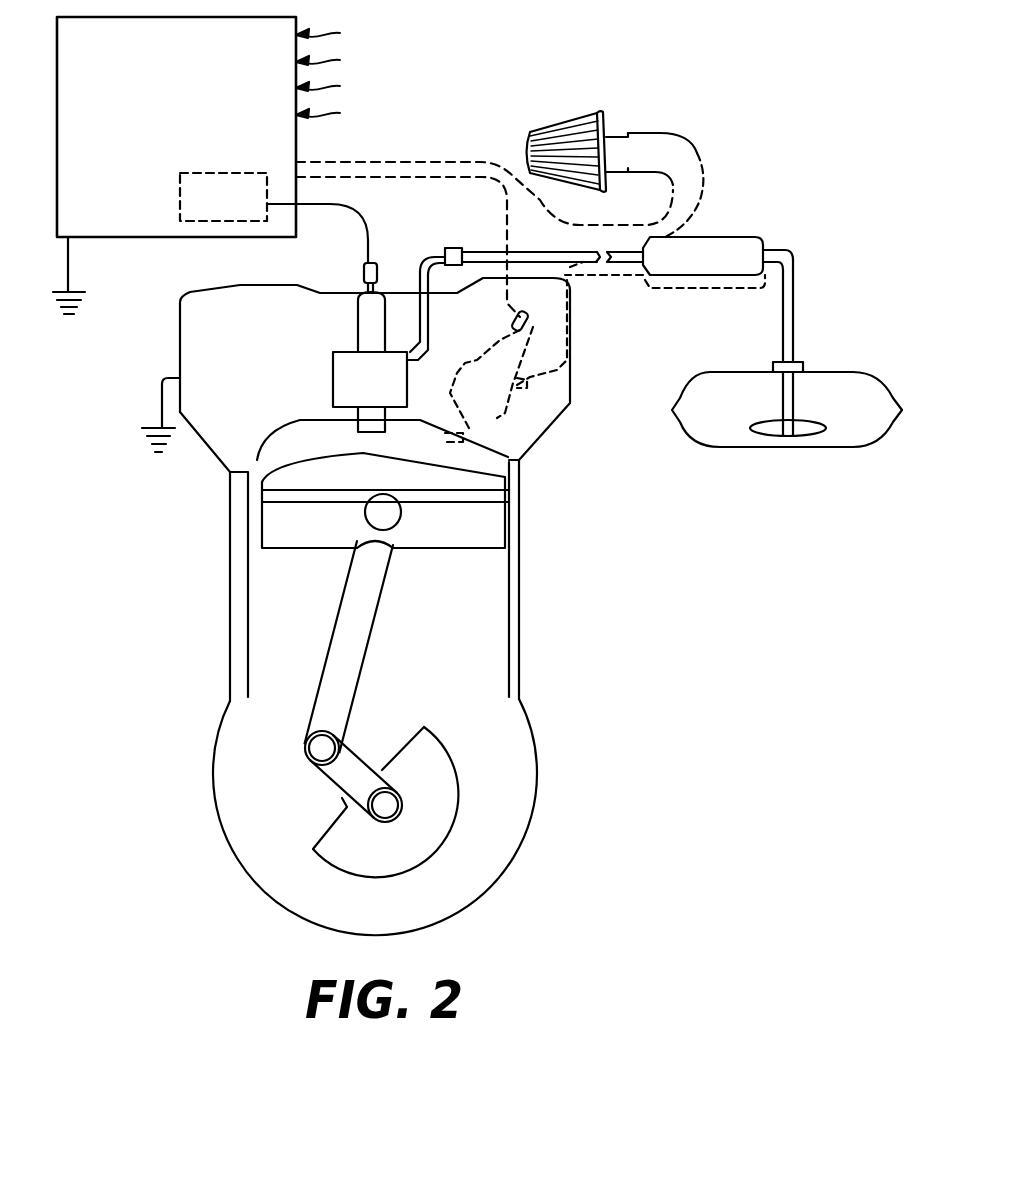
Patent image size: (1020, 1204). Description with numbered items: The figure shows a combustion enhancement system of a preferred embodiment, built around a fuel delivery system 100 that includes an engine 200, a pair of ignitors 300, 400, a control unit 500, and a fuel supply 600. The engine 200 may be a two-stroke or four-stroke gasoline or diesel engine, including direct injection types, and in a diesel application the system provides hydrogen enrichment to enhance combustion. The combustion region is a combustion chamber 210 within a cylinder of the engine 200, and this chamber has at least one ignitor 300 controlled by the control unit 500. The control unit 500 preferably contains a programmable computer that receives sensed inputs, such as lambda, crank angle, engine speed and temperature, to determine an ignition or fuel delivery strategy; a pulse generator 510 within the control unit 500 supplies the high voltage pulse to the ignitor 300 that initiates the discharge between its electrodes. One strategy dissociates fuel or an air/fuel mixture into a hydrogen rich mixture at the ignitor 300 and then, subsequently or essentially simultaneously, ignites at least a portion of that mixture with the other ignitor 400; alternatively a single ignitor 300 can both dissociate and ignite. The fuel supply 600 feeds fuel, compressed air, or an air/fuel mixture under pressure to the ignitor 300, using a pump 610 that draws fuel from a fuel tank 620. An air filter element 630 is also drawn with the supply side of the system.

The fuel delivery system 100 is at (629, 623).
The engine 200 is at (227, 442).
The combustion chamber 210 is at (253, 470).
The ignitor 300 is at (345, 382).
The ignitor 400 is at (497, 400).
The control unit 500 is at (158, 134).
The pulse generator 510 is at (201, 213).
The fuel supply 600 is at (768, 319).
The pump 610 is at (682, 267).
The fuel tank 620 is at (703, 430).
The air filter 630 is at (680, 156).